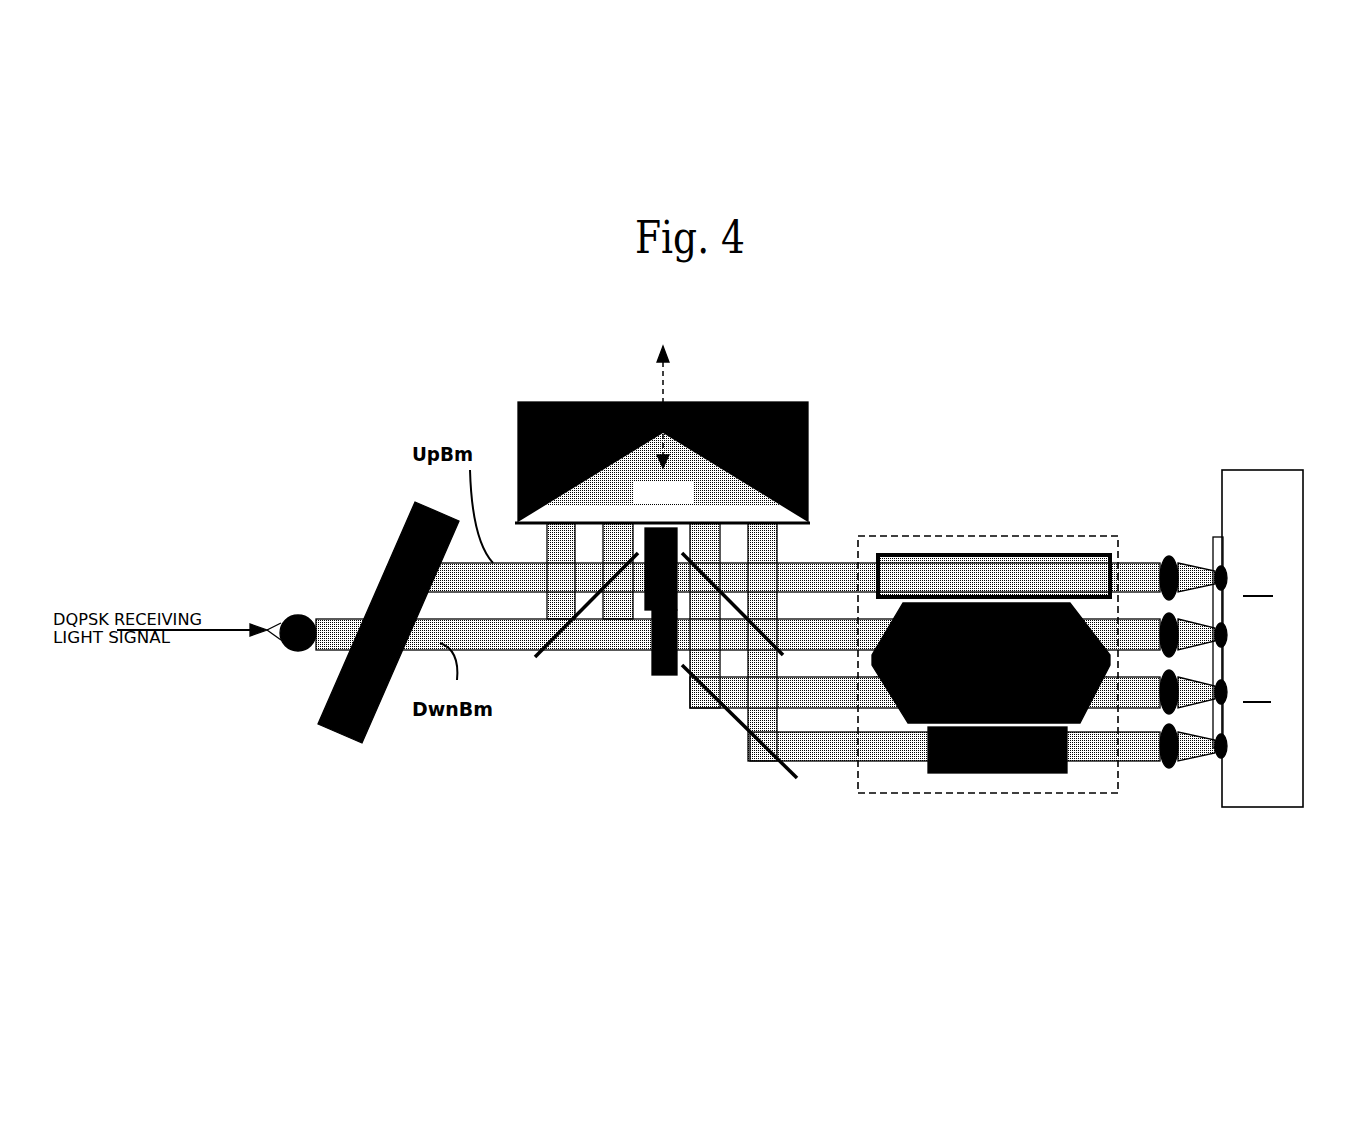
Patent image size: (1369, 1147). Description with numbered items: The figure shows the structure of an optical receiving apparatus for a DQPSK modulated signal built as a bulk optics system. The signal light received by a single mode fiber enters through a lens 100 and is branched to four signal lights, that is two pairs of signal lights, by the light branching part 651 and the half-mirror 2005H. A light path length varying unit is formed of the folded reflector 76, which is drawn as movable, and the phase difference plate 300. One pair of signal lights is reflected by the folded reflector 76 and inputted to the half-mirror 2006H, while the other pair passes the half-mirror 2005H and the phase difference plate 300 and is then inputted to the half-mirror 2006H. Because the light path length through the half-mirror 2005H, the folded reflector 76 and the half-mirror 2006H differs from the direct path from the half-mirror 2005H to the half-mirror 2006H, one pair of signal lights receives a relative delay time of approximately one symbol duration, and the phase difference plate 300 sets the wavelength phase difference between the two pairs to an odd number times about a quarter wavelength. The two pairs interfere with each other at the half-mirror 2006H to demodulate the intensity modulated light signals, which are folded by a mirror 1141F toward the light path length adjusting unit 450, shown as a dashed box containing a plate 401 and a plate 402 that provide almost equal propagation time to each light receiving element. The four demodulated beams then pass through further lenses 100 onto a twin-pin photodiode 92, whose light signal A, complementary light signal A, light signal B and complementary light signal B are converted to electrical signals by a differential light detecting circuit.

The folded reflector 76 is at (562, 401).
The lens 100 is at (303, 614).
The light branching part 651 is at (408, 517).
The half-mirror 2005H is at (580, 615).
The half-mirror 2006H is at (733, 600).
The phase difference plate 300 is at (657, 677).
The folding mirror 1141F is at (736, 720).
The light path length adjusting plate 401 is at (1018, 556).
The light path length adjusting plate 402 is at (938, 773).
The light path length adjusting unit 450 is at (988, 673).
The twin-pin photodiode 92 is at (1255, 470).